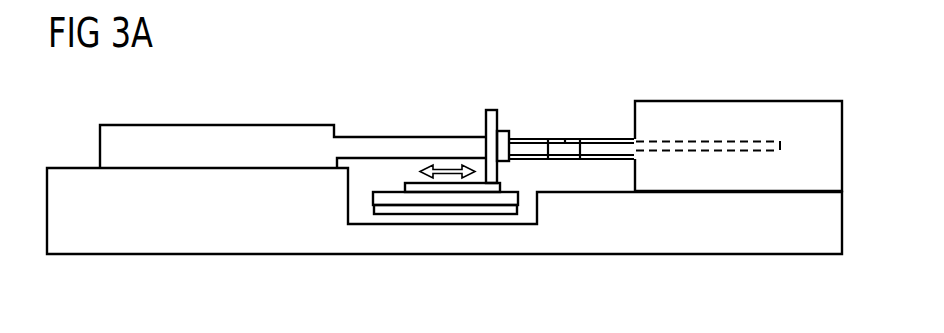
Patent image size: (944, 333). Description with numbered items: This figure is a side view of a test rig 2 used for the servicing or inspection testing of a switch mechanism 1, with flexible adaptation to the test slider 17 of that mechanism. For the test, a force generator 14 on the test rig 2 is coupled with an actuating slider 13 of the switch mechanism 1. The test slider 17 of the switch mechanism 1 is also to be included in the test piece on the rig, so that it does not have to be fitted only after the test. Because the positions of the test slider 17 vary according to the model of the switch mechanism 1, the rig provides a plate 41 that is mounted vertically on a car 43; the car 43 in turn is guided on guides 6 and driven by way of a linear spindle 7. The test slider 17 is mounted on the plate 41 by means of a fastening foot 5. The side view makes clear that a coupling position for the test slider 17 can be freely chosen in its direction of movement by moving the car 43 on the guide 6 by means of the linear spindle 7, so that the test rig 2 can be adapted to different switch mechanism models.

The switch mechanism 1 is at (735, 110).
The test rig 2 is at (72, 178).
The fastening foot 5 is at (529, 152).
The guides 6 is at (468, 200).
The linear spindle 7 is at (498, 211).
The actuating slider 13 is at (578, 151).
The force generator 14 is at (218, 138).
The test slider 17 is at (624, 147).
The plate 41 is at (492, 117).
The car 43 is at (412, 183).